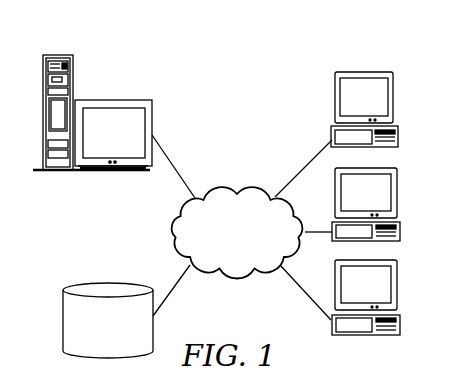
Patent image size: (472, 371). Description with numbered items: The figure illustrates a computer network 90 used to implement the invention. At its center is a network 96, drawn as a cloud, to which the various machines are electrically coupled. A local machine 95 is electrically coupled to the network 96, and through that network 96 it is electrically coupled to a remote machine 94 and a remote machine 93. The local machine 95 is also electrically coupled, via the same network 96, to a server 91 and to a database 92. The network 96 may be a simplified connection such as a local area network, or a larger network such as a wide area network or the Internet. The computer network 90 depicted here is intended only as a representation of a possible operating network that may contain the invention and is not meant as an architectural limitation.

The computer network 90 is at (297, 67).
The server 91 is at (73, 73).
The database 92 is at (121, 337).
The remote machine 93 is at (396, 288).
The remote machine 94 is at (398, 192).
The local machine 95 is at (395, 98).
The network 96 is at (250, 248).